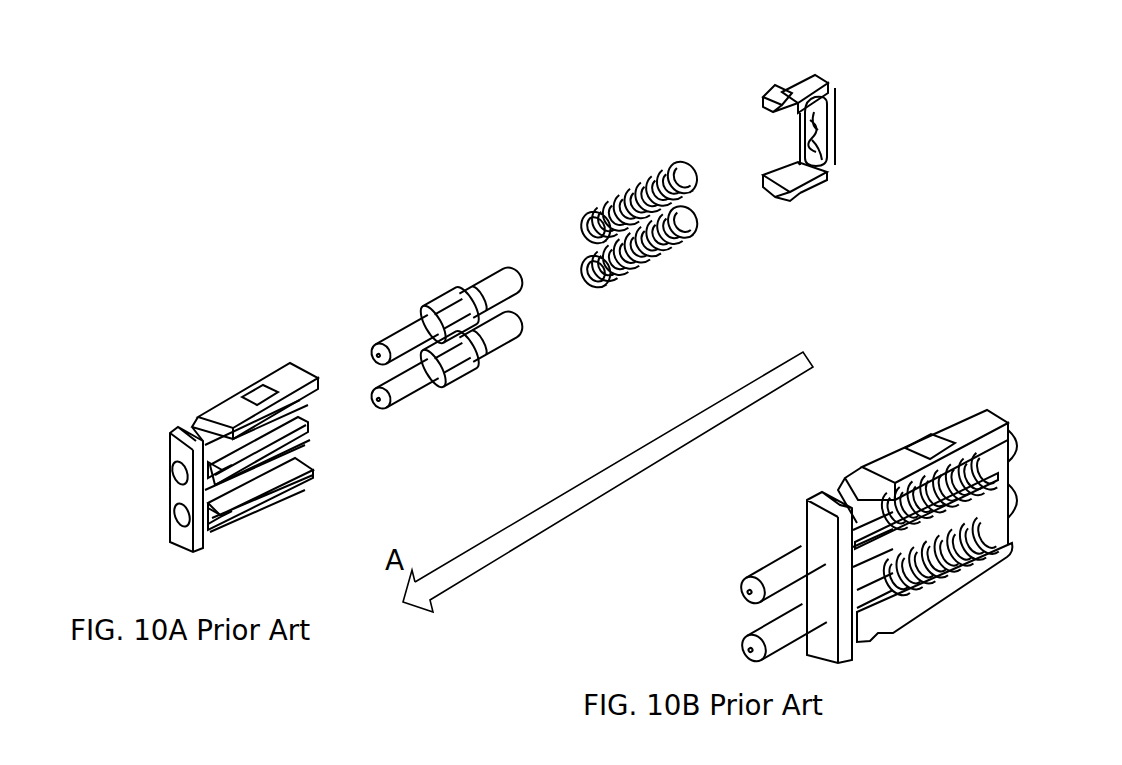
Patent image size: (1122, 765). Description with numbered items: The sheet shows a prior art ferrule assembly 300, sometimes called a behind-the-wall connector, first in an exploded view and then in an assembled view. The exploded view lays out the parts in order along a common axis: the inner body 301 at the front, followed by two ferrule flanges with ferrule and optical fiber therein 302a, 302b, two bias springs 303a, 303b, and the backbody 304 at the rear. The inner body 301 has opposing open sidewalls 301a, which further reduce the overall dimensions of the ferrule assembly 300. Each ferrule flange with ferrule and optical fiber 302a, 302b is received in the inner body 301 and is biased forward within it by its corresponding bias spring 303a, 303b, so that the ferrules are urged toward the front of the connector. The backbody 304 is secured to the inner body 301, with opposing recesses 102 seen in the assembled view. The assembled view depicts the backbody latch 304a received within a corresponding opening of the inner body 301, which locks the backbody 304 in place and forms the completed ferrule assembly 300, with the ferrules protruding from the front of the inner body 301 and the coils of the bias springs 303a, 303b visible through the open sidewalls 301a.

In FIG. 10A, the ferrule assembly 300 is at (110, 226).
In FIG. 10B, the ferrule assembly 300 is at (947, 367).
In FIG. 10A, the inner body 301 is at (200, 395).
In FIG. 10A, the opposing open sidewall 301a is at (322, 400).
In FIG. 10A, the ferrule flange with ferrule and optical fiber 302a is at (506, 233).
In FIG. 10B, the ferrule flange with ferrule and optical fiber 302a is at (755, 572).
In FIG. 10A, the ferrule flange with ferrule and optical fiber 302b is at (368, 328).
In FIG. 10A, the bias spring 303a is at (729, 232).
In FIG. 10A, the bias spring 303b is at (621, 313).
In FIG. 10A, the backbody 304 is at (840, 168).
In FIG. 10A, the backbody latch 304a is at (758, 92).
In FIG. 10B, the backbody latch 304a is at (940, 440).
In FIG. 10B, the opposing recesses 102 is at (879, 646).